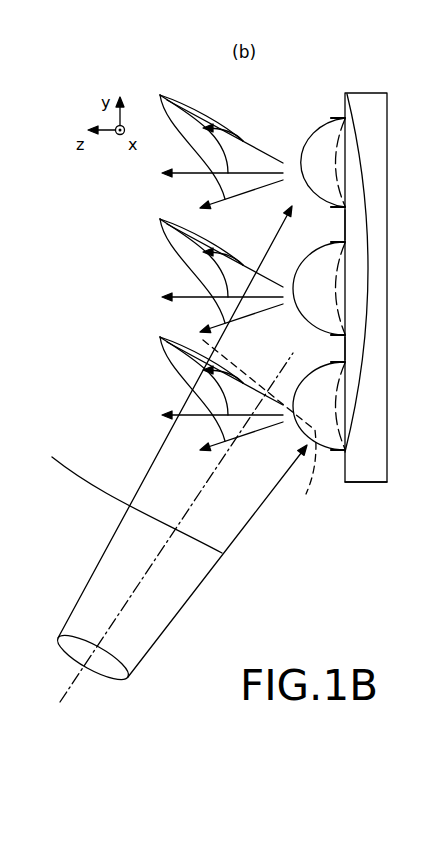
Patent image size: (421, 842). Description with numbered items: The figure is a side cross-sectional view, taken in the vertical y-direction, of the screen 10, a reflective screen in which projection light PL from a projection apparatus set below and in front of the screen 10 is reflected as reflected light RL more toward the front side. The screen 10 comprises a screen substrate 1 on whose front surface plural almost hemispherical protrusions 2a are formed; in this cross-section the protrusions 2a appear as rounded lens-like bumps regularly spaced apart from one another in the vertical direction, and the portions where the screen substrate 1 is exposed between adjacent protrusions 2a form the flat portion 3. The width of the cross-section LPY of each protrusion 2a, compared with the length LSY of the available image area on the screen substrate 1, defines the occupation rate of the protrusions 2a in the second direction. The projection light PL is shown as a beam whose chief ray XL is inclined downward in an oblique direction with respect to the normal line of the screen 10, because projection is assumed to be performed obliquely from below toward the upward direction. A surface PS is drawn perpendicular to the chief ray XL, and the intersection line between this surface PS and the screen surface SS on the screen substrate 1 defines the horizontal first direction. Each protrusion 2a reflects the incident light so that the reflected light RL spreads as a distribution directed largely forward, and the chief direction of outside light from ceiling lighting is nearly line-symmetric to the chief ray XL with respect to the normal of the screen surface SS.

The screen 10 is at (368, 84).
The screen substrate 1 is at (344, 108).
The protrusion 2a is at (201, 377).
The flat portion 3 is at (345, 230).
The reflected light RL is at (211, 260).
The width of a cross-section of each protrusion in the y-direction LPY is at (322, 284).
The length of the available area of the image in the y-direction LSY is at (366, 291).
The projection light PL is at (143, 473).
The chief ray XL is at (190, 507).
The surface vertical to the chief ray PS is at (259, 430).
The screen surface SS is at (345, 483).